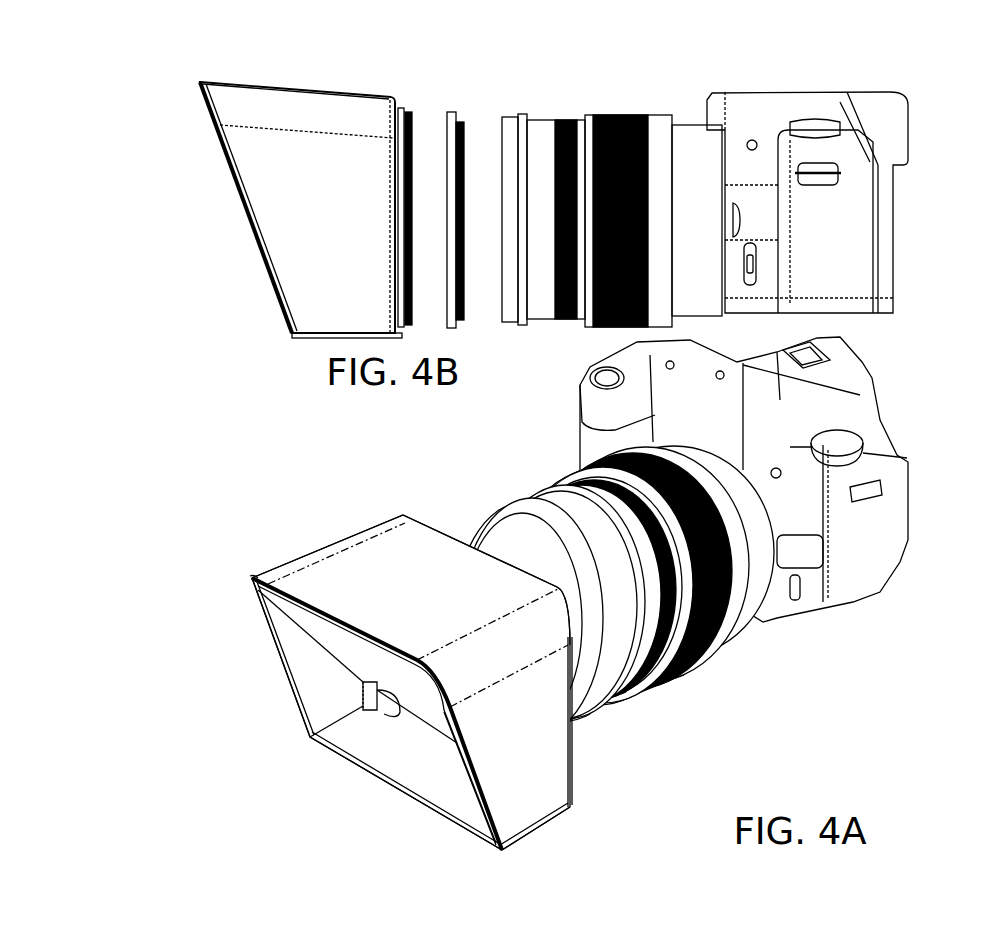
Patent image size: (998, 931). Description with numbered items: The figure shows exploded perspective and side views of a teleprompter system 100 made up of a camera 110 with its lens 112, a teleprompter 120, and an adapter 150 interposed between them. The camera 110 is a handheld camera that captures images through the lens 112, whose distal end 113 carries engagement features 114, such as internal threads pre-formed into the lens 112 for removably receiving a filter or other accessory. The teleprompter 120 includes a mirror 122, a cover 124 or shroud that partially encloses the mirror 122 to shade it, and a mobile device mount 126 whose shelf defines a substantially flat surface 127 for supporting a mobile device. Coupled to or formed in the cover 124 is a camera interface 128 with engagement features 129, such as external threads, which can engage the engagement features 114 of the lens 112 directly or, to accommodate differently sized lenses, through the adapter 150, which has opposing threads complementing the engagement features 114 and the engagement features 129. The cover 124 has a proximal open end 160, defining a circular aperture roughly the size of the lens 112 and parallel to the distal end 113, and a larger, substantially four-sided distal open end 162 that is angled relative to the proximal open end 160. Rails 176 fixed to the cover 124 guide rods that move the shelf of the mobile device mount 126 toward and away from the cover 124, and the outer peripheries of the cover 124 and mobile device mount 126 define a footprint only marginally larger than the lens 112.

In FIG. 4B, the teleprompter system 100 is at (721, 184).
In FIG. 4A, the teleprompter system 100 is at (715, 569).
In FIG. 4B, the camera 110 is at (888, 92).
In FIG. 4A, the camera 110 is at (585, 402).
In FIG. 4B, the lens 112 is at (596, 190).
In FIG. 4A, the lens 112 is at (627, 609).
In FIG. 4B, the distal end of the lens 113 is at (500, 143).
In FIG. 4A, the engagement features 114 is at (617, 702).
In FIG. 4B, the teleprompter 120 is at (289, 223).
In FIG. 4A, the teleprompter 120 is at (388, 669).
In FIG. 4A, the mirror 122 is at (252, 580).
In FIG. 4B, the cover 124 is at (260, 102).
In FIG. 4A, the cover 124 is at (510, 836).
In FIG. 4B, the mobile device mount 126 is at (297, 335).
In FIG. 4A, the mobile device mount 126 is at (303, 745).
In FIG. 4A, the surface 127 is at (437, 757).
In FIG. 4B, the camera interface 128 is at (414, 183).
In FIG. 4B, the engagement features 129 is at (412, 287).
In FIG. 4B, the adapter 150 is at (452, 112).
In FIG. 4A, the adapter 150 is at (492, 520).
In FIG. 4B, the proximal open end 160 is at (410, 197).
In FIG. 4A, the proximal open end 160 is at (576, 742).
In FIG. 4B, the distal open end 162 is at (243, 215).
In FIG. 4A, the distal open end 162 is at (262, 640).
In FIG. 4A, the rails 176 is at (365, 695).